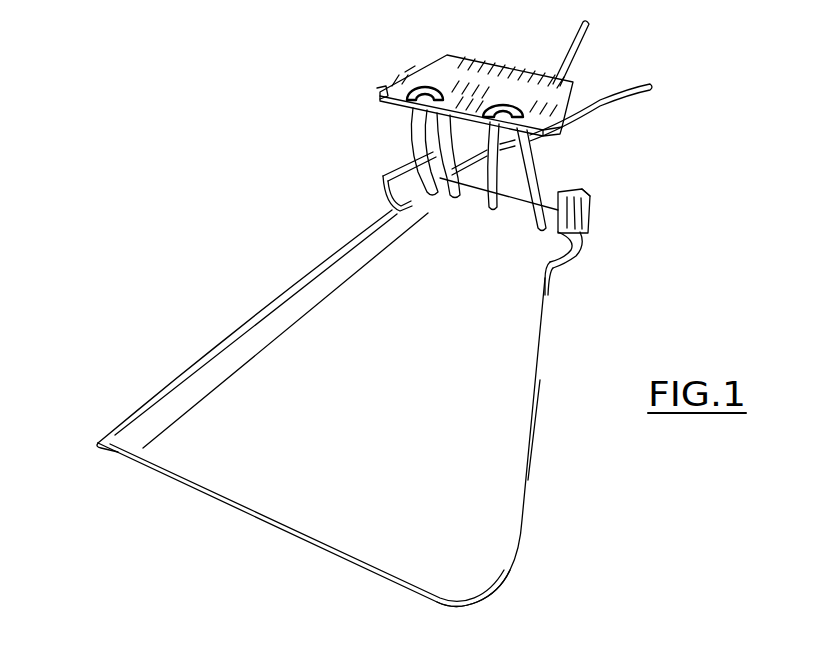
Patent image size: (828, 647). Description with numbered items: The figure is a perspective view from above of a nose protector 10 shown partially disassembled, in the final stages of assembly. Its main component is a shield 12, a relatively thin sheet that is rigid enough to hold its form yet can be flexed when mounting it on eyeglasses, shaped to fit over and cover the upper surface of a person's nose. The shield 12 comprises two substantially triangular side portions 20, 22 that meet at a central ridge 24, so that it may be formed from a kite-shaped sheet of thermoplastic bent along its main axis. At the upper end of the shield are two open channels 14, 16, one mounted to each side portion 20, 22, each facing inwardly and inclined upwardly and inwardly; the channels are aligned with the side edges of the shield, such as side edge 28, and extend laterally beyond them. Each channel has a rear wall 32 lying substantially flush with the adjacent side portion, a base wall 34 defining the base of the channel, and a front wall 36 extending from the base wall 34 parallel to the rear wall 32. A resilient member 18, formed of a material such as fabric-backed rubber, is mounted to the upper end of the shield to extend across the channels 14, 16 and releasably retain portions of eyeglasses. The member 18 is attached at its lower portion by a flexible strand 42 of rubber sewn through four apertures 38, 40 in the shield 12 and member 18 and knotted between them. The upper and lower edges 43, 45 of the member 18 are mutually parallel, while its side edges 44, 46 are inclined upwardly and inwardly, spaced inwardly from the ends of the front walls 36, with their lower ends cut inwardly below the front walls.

The nose protector 10 is at (237, 270).
The shield 12 is at (542, 370).
The open channel 14 is at (591, 233).
The open channel 16 is at (384, 180).
The resilient member 18 is at (470, 59).
The side portion 20 is at (508, 544).
The side portion 22 is at (118, 428).
The central ridge 24 is at (180, 400).
The side edge 28 is at (532, 468).
The rear wall 32 is at (562, 264).
The base wall 34 is at (588, 258).
The front wall 36 is at (582, 200).
The aperture 38 is at (393, 209).
The aperture 40 is at (413, 96).
The flexible strand 42 is at (622, 104).
The upper edge 43 is at (507, 66).
The side edge 44 is at (572, 103).
The lower edge 45 is at (386, 100).
The side edge 46 is at (410, 68).